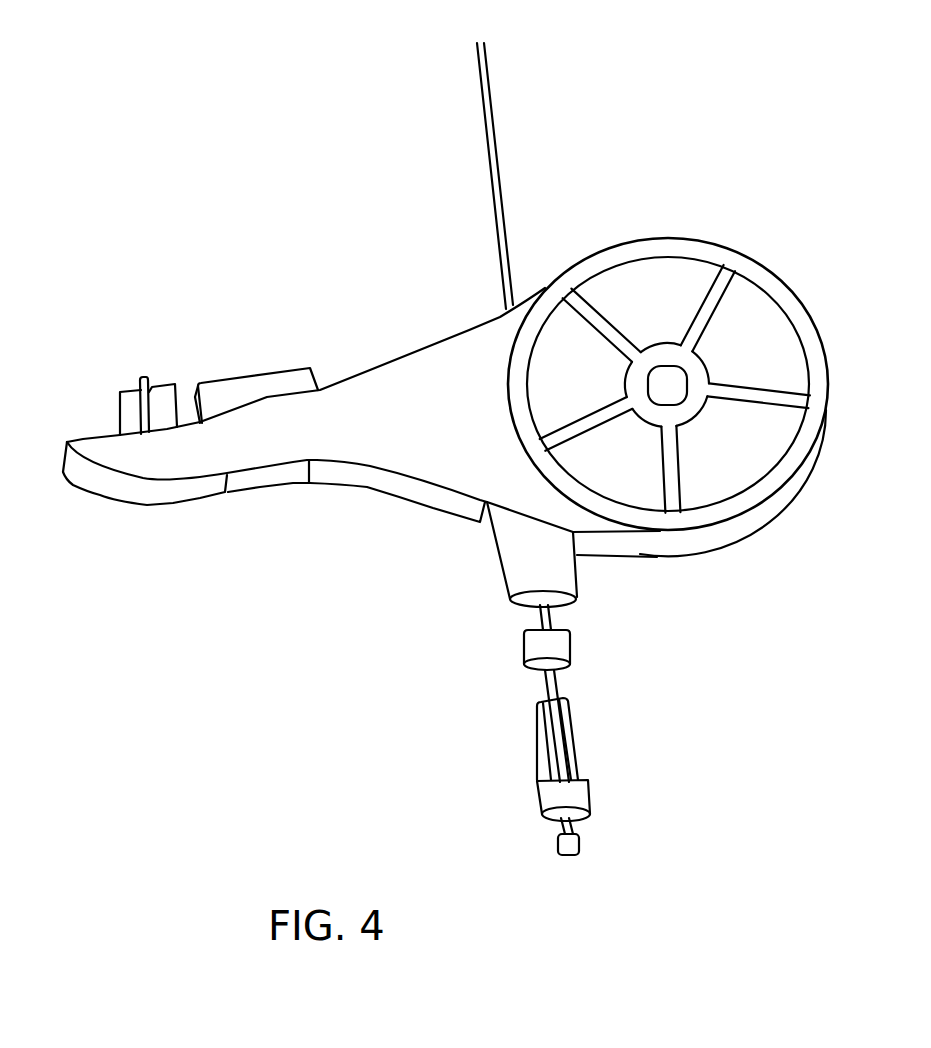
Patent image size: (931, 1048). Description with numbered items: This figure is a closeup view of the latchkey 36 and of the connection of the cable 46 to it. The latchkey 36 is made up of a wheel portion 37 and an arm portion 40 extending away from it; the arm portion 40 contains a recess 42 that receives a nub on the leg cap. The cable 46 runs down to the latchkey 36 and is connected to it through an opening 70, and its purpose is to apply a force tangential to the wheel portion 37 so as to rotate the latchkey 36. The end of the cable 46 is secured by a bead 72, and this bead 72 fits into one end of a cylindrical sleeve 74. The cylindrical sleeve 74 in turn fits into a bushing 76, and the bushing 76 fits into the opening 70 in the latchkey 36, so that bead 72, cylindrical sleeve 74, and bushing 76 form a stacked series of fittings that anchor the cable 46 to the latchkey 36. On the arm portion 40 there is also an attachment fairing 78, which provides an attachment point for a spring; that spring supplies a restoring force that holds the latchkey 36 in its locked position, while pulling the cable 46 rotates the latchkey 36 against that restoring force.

The latchkey 36 is at (332, 598).
The wheel portion 37 is at (707, 240).
The arm portion 40 is at (397, 362).
The recess 42 is at (261, 477).
The cable 46 is at (495, 123).
The opening 70 is at (530, 607).
The bead 72 is at (580, 845).
The cylindrical sleeve 74 is at (589, 780).
The bushing 76 is at (570, 652).
The attachment fairing 78 is at (120, 407).